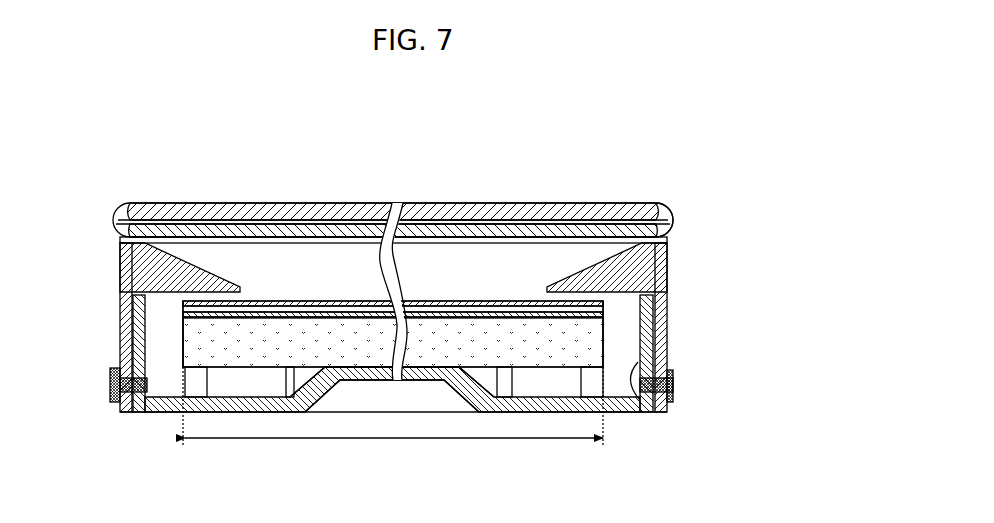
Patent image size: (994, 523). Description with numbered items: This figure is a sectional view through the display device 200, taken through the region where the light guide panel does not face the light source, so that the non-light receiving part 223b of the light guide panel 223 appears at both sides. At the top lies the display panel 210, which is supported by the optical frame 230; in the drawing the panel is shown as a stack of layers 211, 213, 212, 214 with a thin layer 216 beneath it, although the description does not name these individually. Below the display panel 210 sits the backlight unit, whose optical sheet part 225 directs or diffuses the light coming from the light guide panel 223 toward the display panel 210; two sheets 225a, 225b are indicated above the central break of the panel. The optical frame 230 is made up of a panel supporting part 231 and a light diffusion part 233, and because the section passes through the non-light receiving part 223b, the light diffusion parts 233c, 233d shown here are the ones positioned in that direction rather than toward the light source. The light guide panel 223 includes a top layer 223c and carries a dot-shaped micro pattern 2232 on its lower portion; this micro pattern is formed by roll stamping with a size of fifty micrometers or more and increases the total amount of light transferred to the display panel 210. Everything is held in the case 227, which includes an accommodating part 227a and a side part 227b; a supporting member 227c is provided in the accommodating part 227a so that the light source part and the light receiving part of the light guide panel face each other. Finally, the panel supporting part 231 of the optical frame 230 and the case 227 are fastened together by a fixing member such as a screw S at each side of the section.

The display device 200 is at (160, 129).
The display panel 210 is at (590, 150).
The first layer of cover window 211 is at (487, 203).
The adhesive layer of cover window 213 is at (520, 203).
The second layer of cover window 212 is at (547, 203).
The bottom layer of cover window 214 is at (588, 203).
The adhesive plate 216 is at (668, 243).
The optical sheet part 225 is at (460, 138).
The first adhesive portion 225a is at (423, 203).
The second adhesive portion 225b is at (462, 203).
The optical frame 230 is at (720, 270).
The light diffusion part 233 is at (668, 273).
The light diffusion part 233c is at (200, 268).
The light diffusion part 233d is at (625, 203).
The panel supporting part 231 is at (652, 326).
The light guide panel 223 is at (282, 345).
The non-light receiving part 223b is at (182, 345).
The upper layer of display panel 223c is at (320, 317).
The micro pattern 2232 is at (512, 370).
The case 227 is at (693, 482).
The accommodating part 227a is at (612, 408).
The side part 227b is at (643, 403).
The supporting member 227c is at (557, 383).
The screw S is at (675, 383).